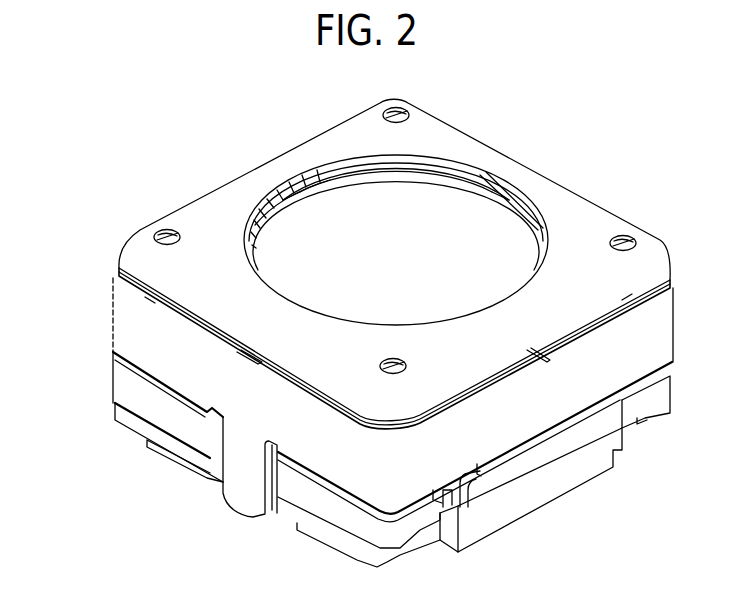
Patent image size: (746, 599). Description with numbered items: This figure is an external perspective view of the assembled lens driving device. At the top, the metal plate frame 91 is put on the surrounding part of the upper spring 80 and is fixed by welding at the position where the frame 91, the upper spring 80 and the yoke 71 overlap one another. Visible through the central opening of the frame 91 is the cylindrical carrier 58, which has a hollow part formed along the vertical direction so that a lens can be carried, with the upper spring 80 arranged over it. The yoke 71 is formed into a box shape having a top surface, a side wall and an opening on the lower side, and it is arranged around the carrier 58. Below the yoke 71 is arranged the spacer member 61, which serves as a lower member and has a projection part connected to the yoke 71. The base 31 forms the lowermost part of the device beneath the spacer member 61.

The base 31 is at (145, 430).
The carrier 58 is at (258, 203).
The spacer member 61 is at (128, 393).
The yoke 71 is at (130, 325).
The upper spring 80 is at (477, 190).
The metal plate frame 91 is at (193, 212).